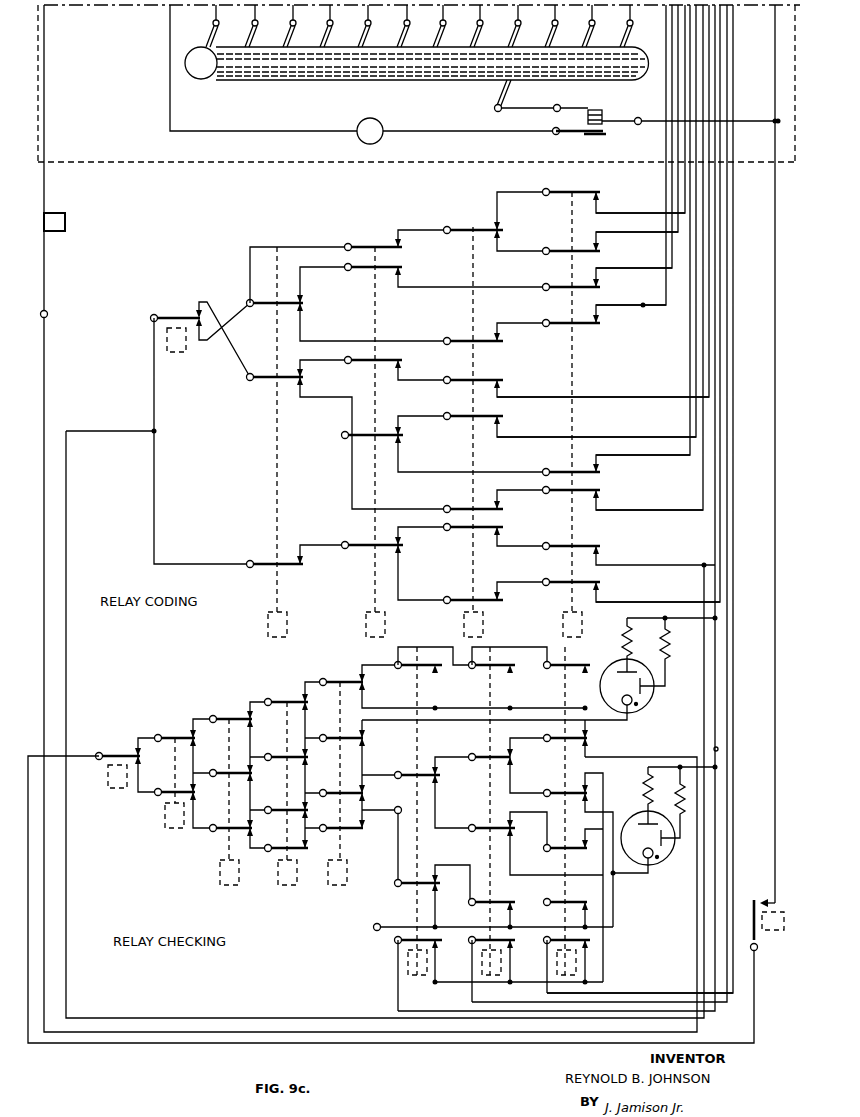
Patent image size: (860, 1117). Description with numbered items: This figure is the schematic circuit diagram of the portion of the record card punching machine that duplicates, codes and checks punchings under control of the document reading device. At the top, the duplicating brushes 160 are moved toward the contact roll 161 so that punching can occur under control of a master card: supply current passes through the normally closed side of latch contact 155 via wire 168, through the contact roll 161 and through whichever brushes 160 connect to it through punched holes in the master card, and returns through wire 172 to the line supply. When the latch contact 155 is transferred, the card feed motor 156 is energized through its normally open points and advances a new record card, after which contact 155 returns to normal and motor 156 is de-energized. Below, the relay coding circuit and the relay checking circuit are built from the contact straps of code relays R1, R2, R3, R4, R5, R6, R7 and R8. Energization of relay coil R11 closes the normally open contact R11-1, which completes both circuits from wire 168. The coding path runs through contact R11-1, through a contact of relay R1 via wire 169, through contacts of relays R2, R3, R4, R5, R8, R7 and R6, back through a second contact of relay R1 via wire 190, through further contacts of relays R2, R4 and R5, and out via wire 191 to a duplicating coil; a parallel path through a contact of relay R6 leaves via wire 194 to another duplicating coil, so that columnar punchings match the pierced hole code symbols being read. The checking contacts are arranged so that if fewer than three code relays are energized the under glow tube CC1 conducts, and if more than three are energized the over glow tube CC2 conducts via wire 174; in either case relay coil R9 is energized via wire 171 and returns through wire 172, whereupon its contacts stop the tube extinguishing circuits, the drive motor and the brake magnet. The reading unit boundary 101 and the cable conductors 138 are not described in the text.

The duplicating brushes 160 is at (213, 28).
The contact roll 161 is at (264, 80).
The card feed motor 156 is at (360, 121).
The latch contact 155 is at (610, 118).
The wire 168 is at (774, 60).
The wire 172 is at (45, 126).
The reading unit 101 is at (290, 166).
The cable conductors 138 is at (734, 206).
The wire 191 is at (643, 305).
The relay coil R9 is at (66, 216).
The wire 171 is at (47, 313).
The wire 190 is at (96, 418).
The code relay R1 is at (180, 353).
The code relay R2 is at (288, 621).
The code relay R3 is at (386, 621).
The code relay R4 is at (484, 621).
The code relay R5 is at (583, 621).
The code relay R6 is at (556, 963).
The code relay R7 is at (492, 976).
The code relay R8 is at (418, 976).
The under glow tube CC1 is at (636, 708).
The over glow tube CC2 is at (656, 862).
The wire 174 is at (374, 930).
The wire 194 is at (612, 995).
The wire 169 is at (500, 1043).
The normally open contact R11-1 is at (762, 902).
The relay coil R11 is at (768, 932).